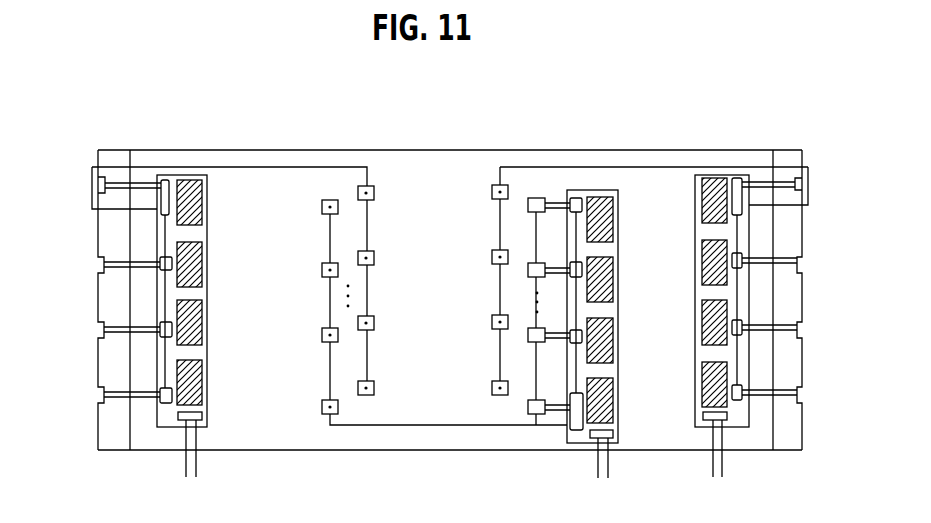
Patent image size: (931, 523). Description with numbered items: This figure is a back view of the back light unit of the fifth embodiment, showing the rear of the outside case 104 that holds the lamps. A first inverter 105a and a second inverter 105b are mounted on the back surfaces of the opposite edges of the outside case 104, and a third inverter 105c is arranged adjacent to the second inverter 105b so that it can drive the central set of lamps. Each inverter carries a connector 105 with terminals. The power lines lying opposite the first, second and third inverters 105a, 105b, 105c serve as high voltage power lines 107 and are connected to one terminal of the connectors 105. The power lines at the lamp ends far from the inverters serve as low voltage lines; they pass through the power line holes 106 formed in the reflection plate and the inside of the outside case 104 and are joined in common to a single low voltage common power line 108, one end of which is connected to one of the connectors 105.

The outside case 104 is at (436, 160).
The connector 105 is at (164, 180).
The first inverter 105a is at (205, 228).
The second inverter 105b is at (697, 355).
The third inverter 105c is at (618, 292).
The power line hole 106 is at (374, 258).
The high voltage power line 107 is at (120, 258).
The low voltage common power line 108 is at (270, 167).